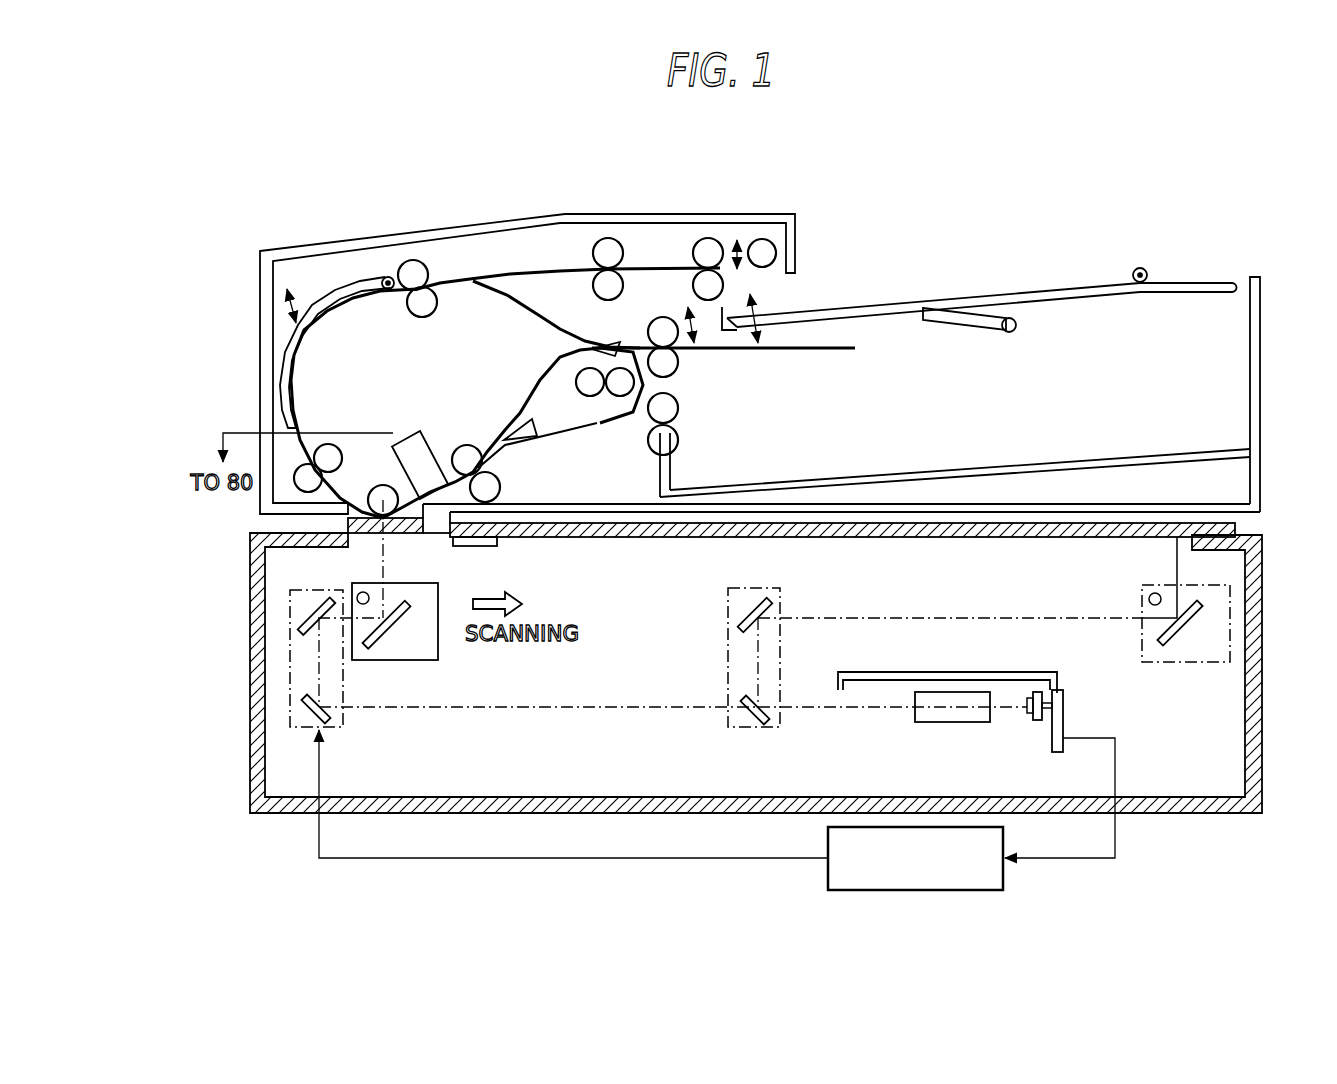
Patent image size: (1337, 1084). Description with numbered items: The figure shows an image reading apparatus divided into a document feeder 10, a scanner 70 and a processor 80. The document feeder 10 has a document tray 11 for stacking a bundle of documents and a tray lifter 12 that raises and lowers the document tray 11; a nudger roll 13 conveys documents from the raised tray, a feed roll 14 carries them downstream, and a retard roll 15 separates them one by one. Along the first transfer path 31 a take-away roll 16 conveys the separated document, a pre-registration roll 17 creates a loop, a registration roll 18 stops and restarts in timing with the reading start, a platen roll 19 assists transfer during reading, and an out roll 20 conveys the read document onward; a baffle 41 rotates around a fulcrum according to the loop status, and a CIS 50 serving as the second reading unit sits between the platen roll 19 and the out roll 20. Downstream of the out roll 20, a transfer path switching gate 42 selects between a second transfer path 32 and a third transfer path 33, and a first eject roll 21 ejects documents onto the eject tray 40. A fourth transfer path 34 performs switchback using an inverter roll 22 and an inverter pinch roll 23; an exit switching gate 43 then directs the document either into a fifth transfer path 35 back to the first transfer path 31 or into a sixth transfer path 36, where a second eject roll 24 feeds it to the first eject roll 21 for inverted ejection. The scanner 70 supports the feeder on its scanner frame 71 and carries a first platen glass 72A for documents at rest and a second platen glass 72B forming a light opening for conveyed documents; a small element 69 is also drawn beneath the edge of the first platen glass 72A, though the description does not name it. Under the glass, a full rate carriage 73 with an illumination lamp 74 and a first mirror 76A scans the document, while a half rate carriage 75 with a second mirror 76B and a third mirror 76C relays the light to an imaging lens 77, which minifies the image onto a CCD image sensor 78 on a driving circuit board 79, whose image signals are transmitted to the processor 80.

The document feeder 10 is at (978, 238).
The document tray 11 is at (888, 302).
The tray lifter 12 is at (990, 332).
The nudger roll 13 is at (776, 253).
The feed roll 14 is at (707, 238).
The retard roll 15 is at (722, 287).
The take-away roll 16 is at (608, 237).
The pre-registration roll 17 is at (420, 320).
The registration roll 18 is at (328, 441).
The platen roll 19 is at (383, 486).
The out roll 20 is at (471, 443).
The first eject roll 21 is at (690, 409).
The inverter roll 22 is at (678, 365).
The inverter pinch roll 23 is at (663, 317).
The second eject roll 24 is at (582, 360).
The first transfer path 31 is at (513, 267).
The second transfer path 32 is at (598, 430).
The third transfer path 33 is at (547, 363).
The fourth transfer path 34 is at (815, 356).
The fifth transfer path 35 is at (493, 291).
The sixth transfer path 36 is at (600, 407).
The eject tray 40 is at (1022, 465).
The baffle 41 is at (330, 297).
The transfer path switching gate 42 is at (520, 445).
The exit switching gate 43 is at (612, 343).
The CIS (Contact Image Sensor) 50 is at (428, 434).
The reference plate 69 is at (497, 541).
The scanner 70 is at (756, 730).
The scanner frame 71 is at (1150, 814).
The first platen glass 72A is at (945, 540).
The second platen glass 72B is at (410, 537).
The full rate carriage 73 is at (1190, 665).
The illumination lamp 74 is at (321, 611).
The half rate carriage 75 is at (477, 685).
The first mirror 76A is at (396, 631).
The second mirror 76B is at (313, 611).
The third mirror 76C is at (311, 718).
The imaging lens 77 is at (955, 723).
The CCD image sensor 78 is at (1040, 721).
The driving circuit board 79 is at (1063, 712).
The processor 80 is at (915, 891).